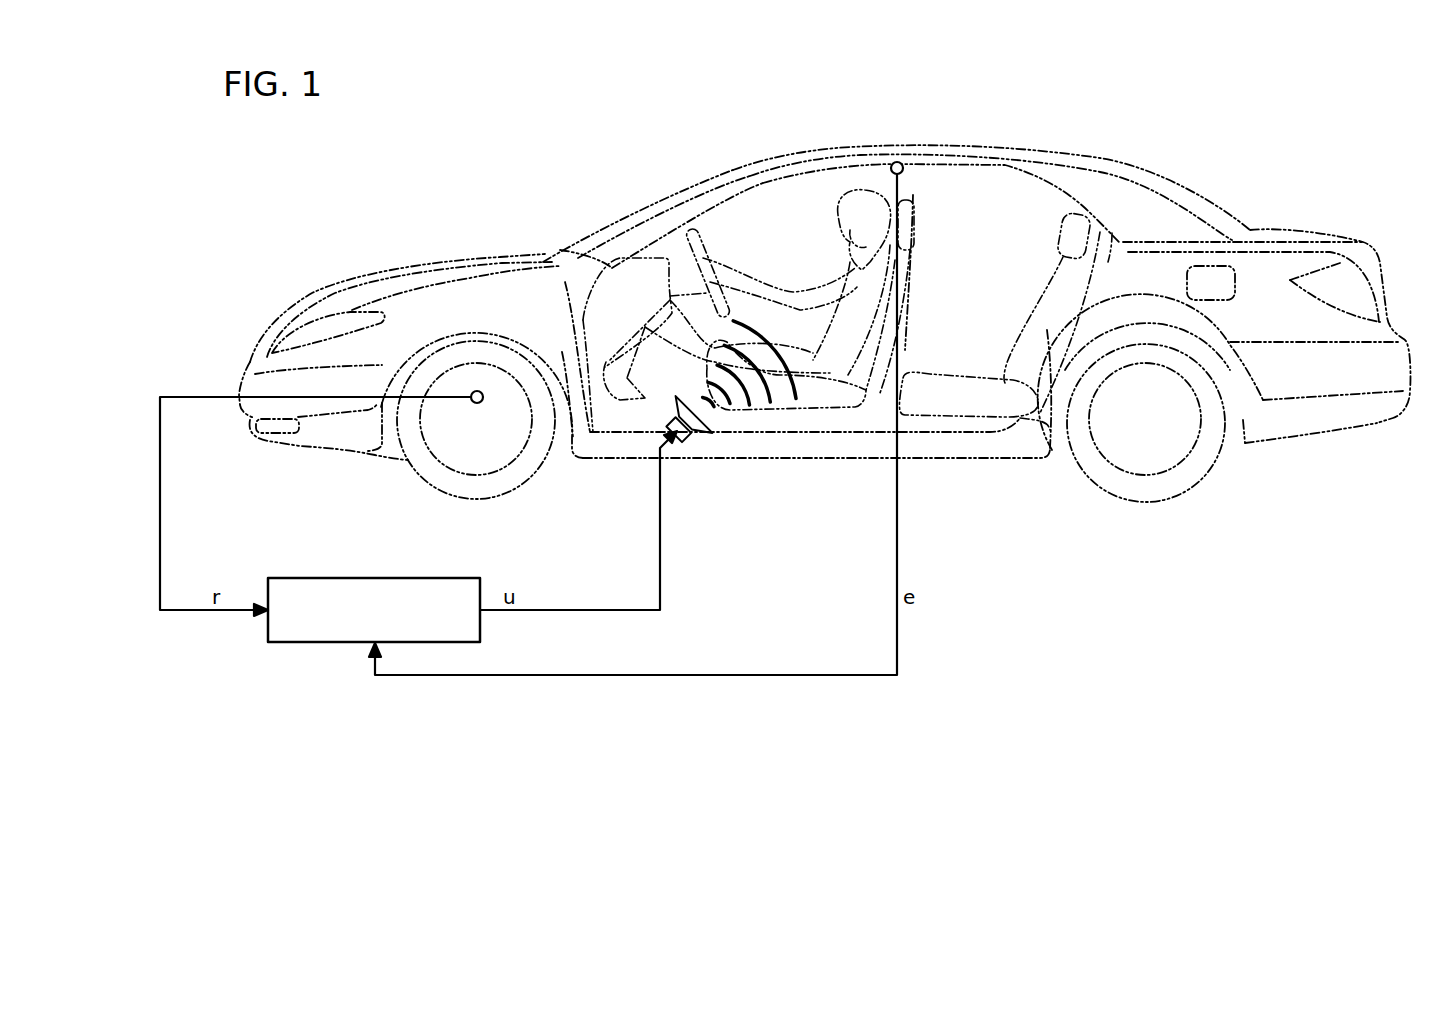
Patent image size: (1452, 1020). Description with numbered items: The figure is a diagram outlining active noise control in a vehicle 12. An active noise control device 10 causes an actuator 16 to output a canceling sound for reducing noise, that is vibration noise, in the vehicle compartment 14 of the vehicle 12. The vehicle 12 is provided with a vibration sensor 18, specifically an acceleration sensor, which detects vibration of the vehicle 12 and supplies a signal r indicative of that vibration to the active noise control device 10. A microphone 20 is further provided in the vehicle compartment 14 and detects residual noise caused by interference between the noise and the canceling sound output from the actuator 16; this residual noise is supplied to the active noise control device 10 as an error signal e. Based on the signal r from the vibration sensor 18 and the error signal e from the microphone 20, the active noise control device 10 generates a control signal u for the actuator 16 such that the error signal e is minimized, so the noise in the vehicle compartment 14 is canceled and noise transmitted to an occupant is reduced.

The active noise control device 10 is at (433, 578).
The vehicle 12 is at (1140, 177).
The vehicle compartment 14 is at (1008, 190).
The actuator 16 is at (710, 418).
The vibration sensor 18 is at (480, 403).
The microphone 20 is at (903, 172).